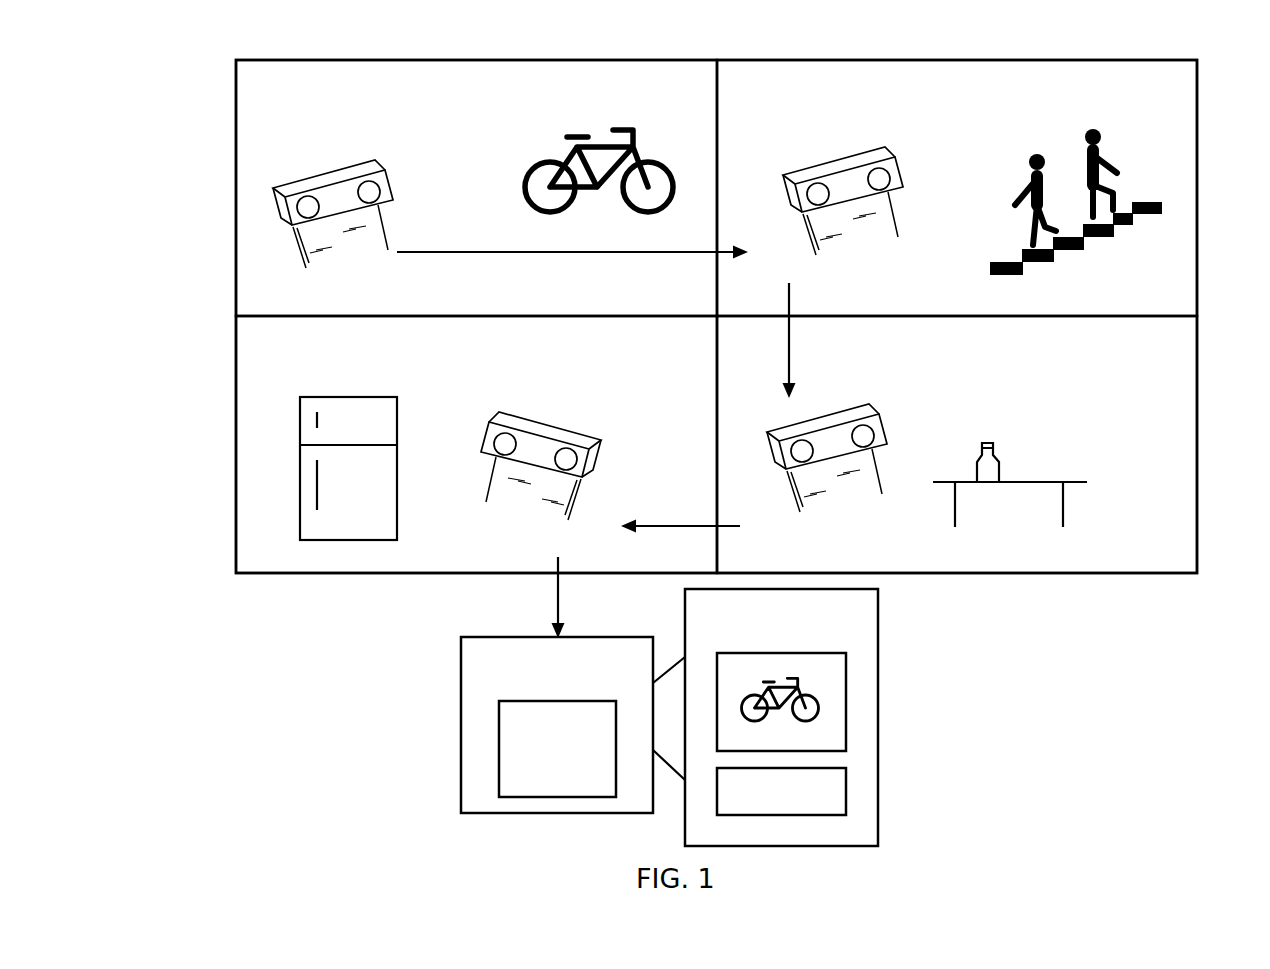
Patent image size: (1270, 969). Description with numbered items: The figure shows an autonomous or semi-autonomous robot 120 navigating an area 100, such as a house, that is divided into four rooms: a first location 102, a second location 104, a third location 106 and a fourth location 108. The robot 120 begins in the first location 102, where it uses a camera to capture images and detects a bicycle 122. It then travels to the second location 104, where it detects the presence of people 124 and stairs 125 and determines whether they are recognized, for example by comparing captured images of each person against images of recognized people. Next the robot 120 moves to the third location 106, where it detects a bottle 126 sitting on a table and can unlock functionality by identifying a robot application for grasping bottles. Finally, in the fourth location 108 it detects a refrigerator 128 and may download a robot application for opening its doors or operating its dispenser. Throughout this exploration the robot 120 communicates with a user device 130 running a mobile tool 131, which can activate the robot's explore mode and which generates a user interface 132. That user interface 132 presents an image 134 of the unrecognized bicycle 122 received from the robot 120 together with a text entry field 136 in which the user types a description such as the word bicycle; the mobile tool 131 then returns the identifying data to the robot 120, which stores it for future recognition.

The area 100 is at (136, 102).
The first location 102 is at (476, 188).
The second location 104 is at (957, 188).
The third location 106 is at (957, 444).
The fourth location 108 is at (476, 444).
The robot 120 is at (298, 117).
The bicycle 122 is at (628, 101).
The people 124 is at (1144, 159).
The stairs 125 is at (1142, 252).
The bottle 126 is at (1022, 471).
The refrigerator 128 is at (263, 401).
The user device 130 is at (557, 725).
The mobile tool 131 is at (557, 749).
The user interface 132 is at (831, 717).
The image 134 is at (865, 682).
The text entry field 136 is at (865, 787).